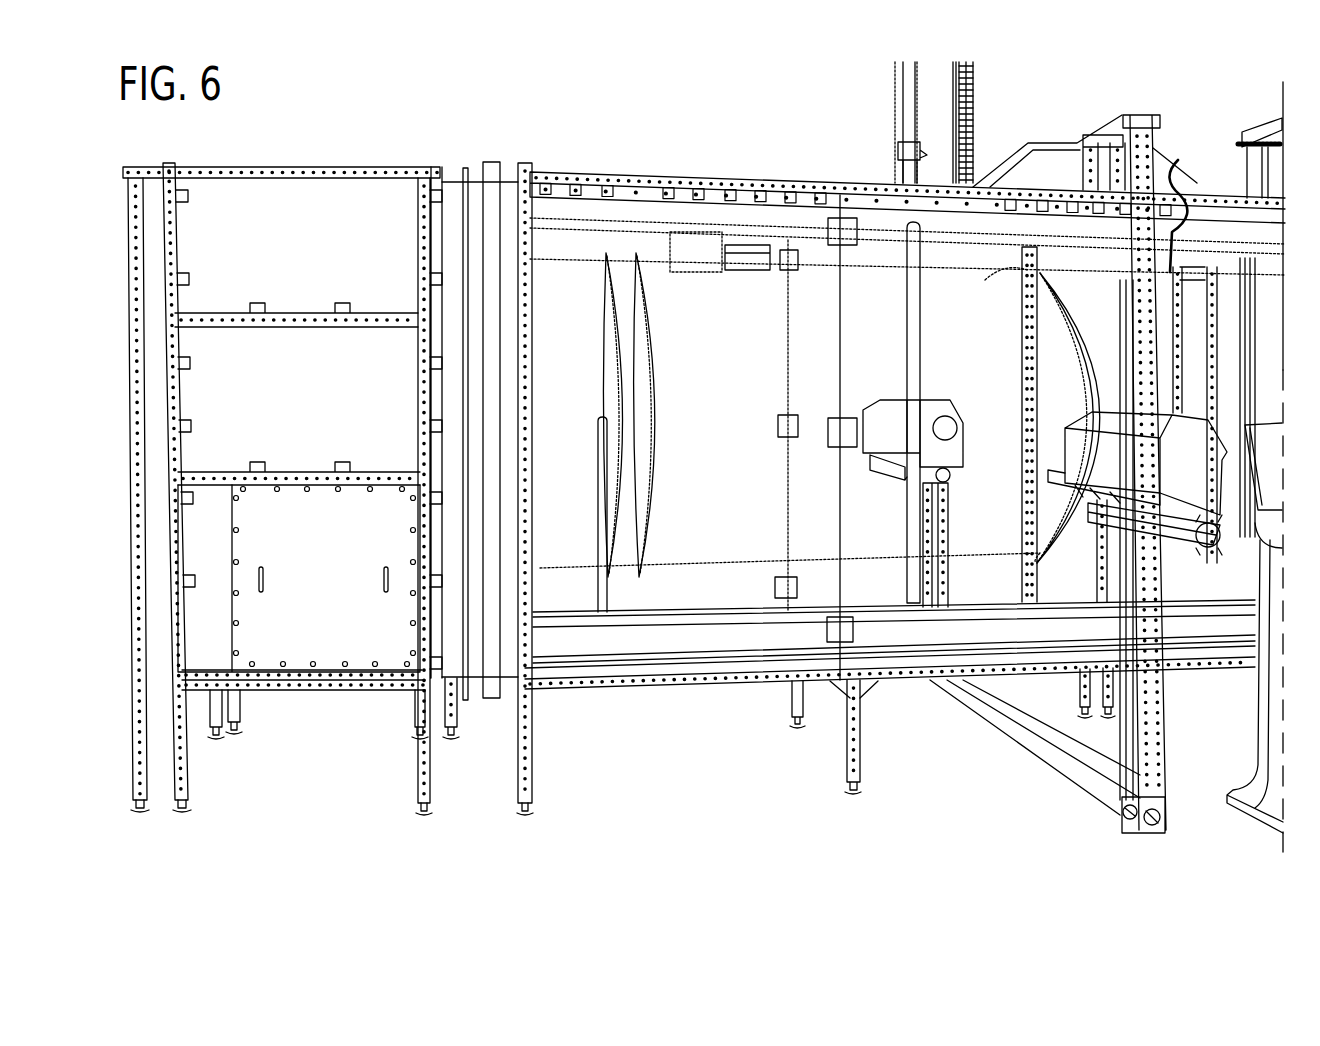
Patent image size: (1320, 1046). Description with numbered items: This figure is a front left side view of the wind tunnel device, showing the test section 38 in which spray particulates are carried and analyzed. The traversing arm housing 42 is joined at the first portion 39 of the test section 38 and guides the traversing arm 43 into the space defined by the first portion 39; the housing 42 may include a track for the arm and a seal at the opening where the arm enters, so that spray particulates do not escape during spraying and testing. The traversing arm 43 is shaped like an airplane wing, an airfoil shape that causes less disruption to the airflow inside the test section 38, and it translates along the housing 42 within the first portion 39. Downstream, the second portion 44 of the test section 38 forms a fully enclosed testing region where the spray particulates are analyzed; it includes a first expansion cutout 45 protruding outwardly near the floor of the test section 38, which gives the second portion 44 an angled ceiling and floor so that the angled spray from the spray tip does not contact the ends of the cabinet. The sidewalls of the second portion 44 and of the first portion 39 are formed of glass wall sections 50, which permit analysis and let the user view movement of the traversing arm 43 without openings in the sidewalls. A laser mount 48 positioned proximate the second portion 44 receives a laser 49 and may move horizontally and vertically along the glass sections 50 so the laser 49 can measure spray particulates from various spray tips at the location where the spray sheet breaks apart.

The test section 38 is at (718, 182).
The first portion 39 is at (795, 215).
The traversing arm housing 42 is at (898, 85).
The traversing arm 43 is at (913, 167).
The second portion 44 is at (1178, 160).
The first expansion cutout 45 is at (1065, 158).
The laser mount 48 is at (1182, 532).
The laser 49 is at (1095, 470).
The glass wall sections 50 is at (658, 247).